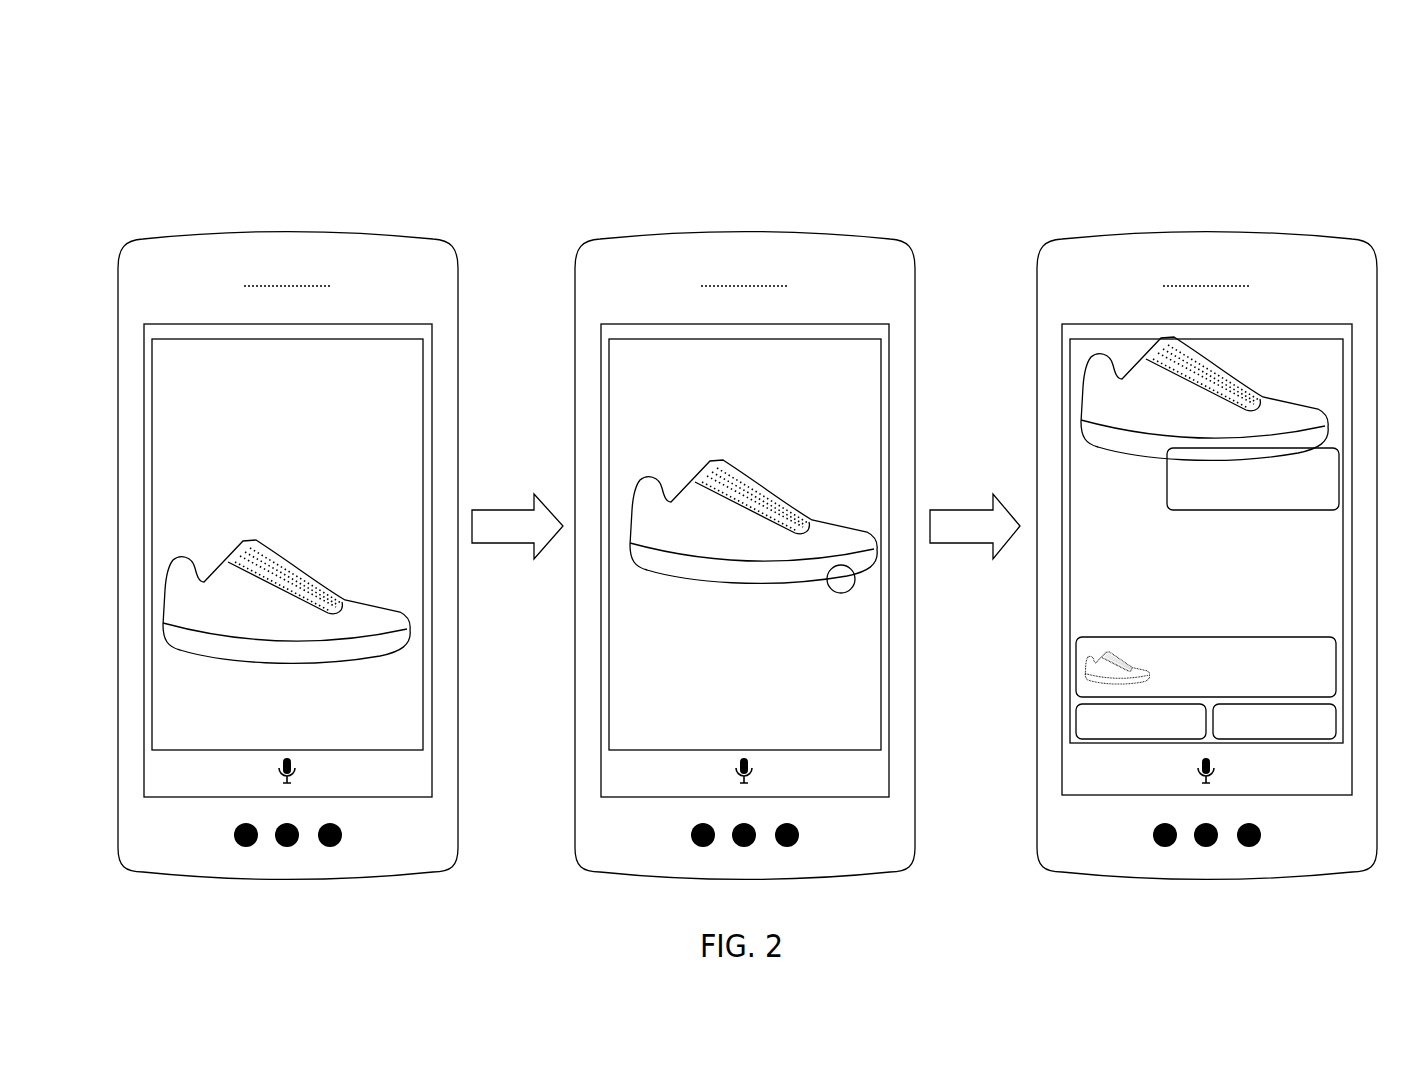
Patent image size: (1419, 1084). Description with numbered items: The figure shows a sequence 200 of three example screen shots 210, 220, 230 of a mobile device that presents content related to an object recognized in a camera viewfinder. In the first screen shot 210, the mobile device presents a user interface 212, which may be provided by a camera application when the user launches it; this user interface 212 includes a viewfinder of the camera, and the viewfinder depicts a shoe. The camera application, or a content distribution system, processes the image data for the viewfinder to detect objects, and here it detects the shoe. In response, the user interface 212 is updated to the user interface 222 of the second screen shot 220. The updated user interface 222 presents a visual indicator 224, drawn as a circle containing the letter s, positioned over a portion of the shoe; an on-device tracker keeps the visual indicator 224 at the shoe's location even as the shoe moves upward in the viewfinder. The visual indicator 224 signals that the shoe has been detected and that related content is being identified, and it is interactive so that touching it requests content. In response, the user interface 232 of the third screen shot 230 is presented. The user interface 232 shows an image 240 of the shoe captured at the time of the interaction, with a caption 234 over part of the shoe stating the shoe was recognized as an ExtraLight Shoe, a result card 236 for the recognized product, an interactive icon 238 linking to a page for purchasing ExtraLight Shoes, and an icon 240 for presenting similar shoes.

The user interface flow 200 is at (138, 105).
The first screen shot 210 is at (145, 233).
The user interface 212 is at (144, 330).
The second screen shot 220 is at (557, 235).
The updated user interface 222 is at (603, 327).
The visual indicator 224 is at (850, 606).
The third screen shot 230 is at (1028, 235).
The user interface 232 is at (1063, 327).
The caption 234 is at (1157, 512).
The product result card 236 is at (1052, 663).
The interactive icon 238 is at (1063, 742).
The image 240 is at (1082, 357).